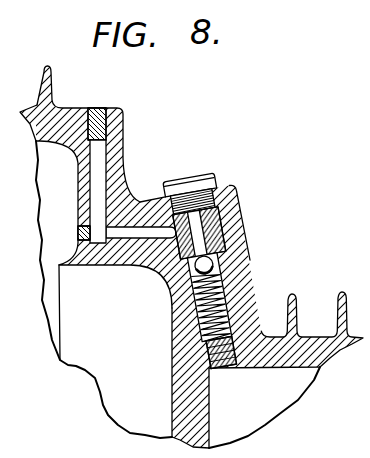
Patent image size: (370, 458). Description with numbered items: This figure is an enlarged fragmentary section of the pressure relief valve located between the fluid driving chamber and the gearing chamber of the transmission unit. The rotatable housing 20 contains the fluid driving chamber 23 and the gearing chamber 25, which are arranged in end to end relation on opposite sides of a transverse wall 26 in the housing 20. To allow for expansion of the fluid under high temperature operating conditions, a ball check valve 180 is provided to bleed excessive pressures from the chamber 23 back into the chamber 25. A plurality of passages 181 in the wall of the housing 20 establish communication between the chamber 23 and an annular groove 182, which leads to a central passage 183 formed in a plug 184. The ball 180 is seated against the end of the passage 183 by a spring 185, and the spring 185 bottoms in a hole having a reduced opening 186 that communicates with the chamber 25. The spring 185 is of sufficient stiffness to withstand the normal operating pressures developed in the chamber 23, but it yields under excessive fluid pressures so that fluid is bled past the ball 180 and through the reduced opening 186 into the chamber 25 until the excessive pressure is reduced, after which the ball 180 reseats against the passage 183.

The housing 20 is at (72, 110).
The fluid driving chamber 23 is at (47, 182).
The gearing chamber 25 is at (302, 382).
The transverse wall 26 is at (180, 413).
The ball check valve 180 is at (215, 263).
The passages 181 is at (97, 172).
The annular groove 182 is at (230, 190).
The central passage 183 is at (226, 238).
The plug 184 is at (188, 182).
The spring 185 is at (226, 307).
The reduced opening 186 is at (226, 372).